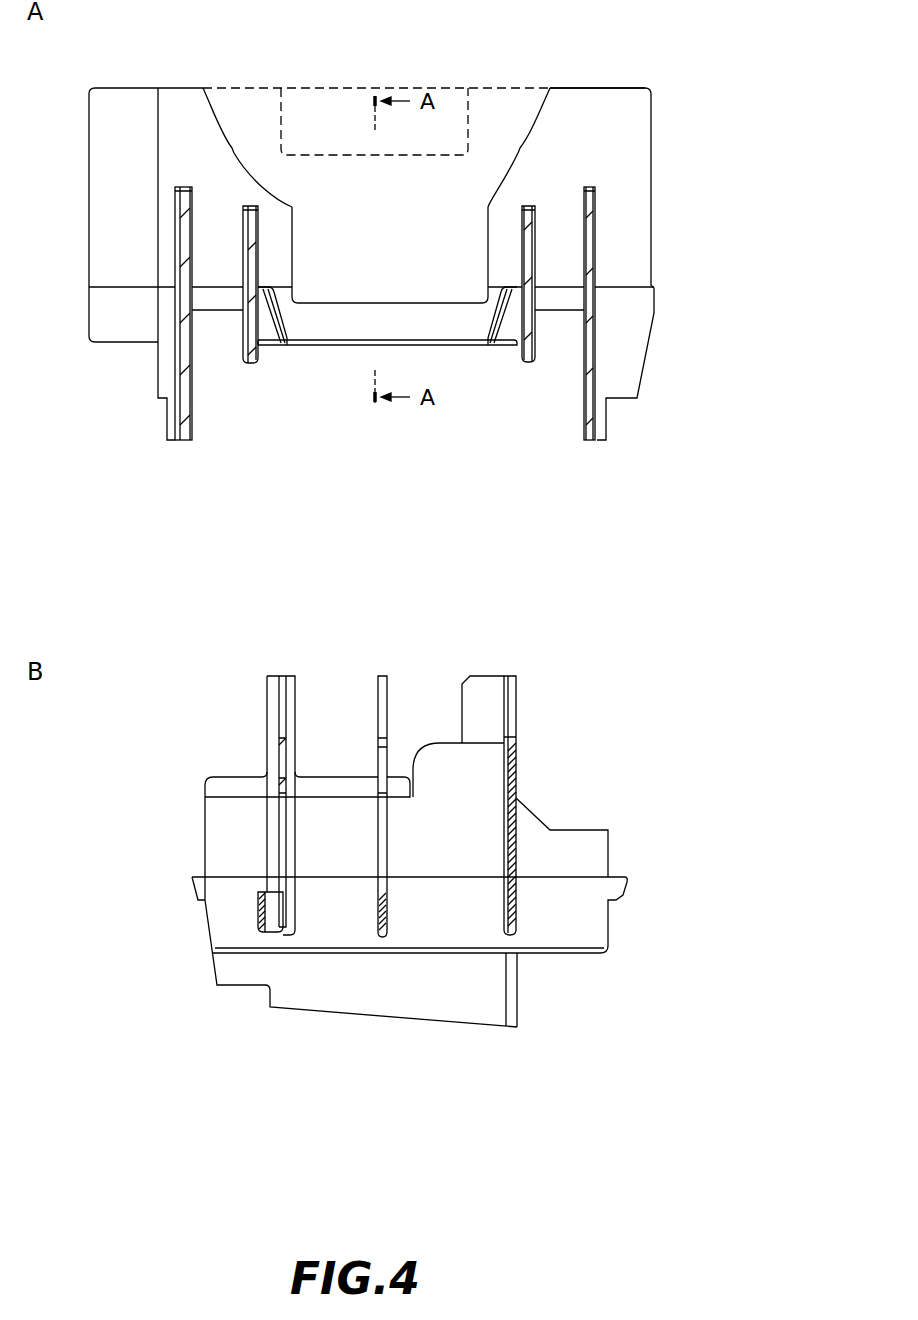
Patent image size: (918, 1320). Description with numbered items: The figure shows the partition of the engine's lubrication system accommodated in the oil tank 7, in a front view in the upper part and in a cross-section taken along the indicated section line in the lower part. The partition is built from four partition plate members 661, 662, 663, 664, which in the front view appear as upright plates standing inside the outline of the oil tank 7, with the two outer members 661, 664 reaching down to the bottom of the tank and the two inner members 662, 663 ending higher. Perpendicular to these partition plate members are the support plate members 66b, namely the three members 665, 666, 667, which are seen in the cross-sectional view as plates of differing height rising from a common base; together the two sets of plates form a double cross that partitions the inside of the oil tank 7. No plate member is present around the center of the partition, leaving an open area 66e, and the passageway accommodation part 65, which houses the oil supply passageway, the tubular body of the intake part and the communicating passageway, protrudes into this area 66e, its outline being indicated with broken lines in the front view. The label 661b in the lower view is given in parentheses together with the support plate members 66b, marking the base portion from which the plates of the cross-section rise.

The oil tank 7 is at (690, 155).
The passageway accommodation part 65 is at (352, 191).
The area around the center 66e is at (399, 448).
The support plate members 66b is at (409, 894).
The base portion of terminal 661b is at (408, 1019).
The partition plate member 661 is at (183, 446).
The partition plate member 662 is at (252, 366).
The partition plate member 663 is at (526, 365).
The partition plate member 664 is at (588, 446).
The support plate member 665 is at (512, 674).
The support plate member 666 is at (614, 95).
The support plate member 667 is at (283, 674).